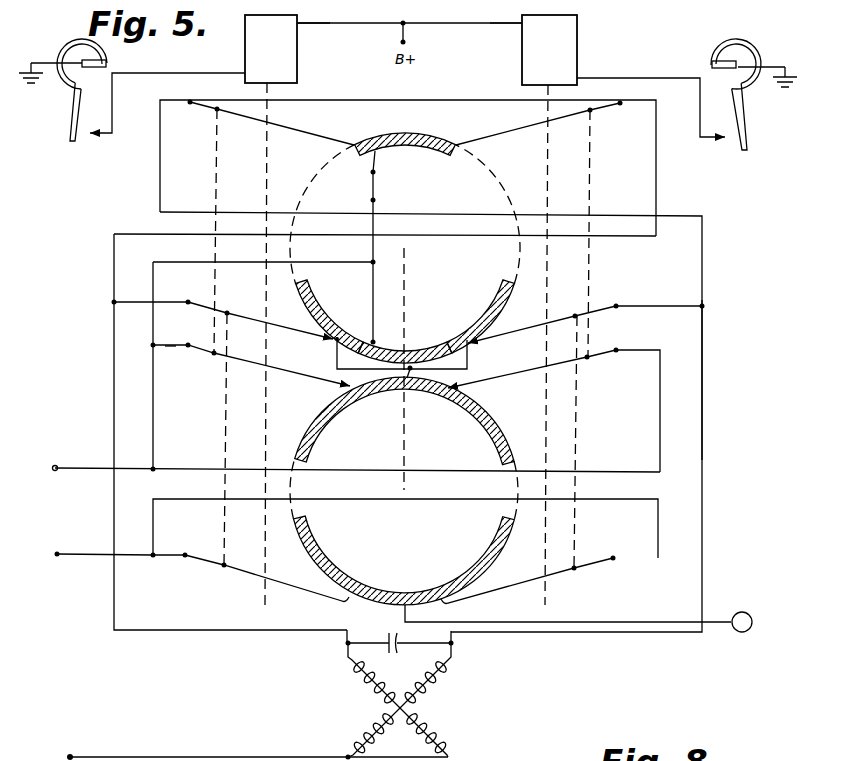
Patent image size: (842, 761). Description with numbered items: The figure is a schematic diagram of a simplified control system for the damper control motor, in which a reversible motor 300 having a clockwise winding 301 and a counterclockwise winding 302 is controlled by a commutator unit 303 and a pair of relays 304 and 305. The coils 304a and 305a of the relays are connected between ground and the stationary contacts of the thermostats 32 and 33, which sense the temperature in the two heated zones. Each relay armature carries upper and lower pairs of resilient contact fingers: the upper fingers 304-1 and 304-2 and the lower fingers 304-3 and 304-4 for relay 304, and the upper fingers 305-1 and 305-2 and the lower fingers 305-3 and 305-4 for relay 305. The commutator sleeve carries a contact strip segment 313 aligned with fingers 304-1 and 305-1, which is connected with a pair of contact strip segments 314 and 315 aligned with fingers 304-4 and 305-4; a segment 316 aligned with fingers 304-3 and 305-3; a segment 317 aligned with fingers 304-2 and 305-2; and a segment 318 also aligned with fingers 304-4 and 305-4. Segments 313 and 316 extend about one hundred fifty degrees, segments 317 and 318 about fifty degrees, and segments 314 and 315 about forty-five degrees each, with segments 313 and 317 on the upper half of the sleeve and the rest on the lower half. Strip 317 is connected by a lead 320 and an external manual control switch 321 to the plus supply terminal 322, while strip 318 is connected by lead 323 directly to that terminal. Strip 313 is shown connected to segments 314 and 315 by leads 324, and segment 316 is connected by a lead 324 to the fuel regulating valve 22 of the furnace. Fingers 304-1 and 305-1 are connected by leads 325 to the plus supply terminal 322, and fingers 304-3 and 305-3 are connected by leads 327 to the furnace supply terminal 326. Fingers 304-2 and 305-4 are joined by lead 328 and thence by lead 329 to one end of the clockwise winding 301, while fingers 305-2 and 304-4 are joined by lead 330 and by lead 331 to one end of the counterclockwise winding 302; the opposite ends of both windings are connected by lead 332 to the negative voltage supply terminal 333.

The fuel regulating valve 22 is at (750, 614).
The thermostat 32 is at (67, 114).
The thermostat 33 is at (757, 95).
The reversible motor 300 is at (428, 695).
The clockwise winding 301 is at (442, 687).
The counterclockwise winding 302 is at (370, 687).
The commutator unit 303 is at (336, 342).
The relay 304 is at (243, 57).
The relay coil 304a is at (298, 58).
The upper contact finger 304-1 is at (315, 405).
The upper contact finger 304-2 is at (283, 123).
The lower contact finger 304-3 is at (297, 590).
The lower contact finger 304-4 is at (298, 333).
The relay 305 is at (581, 53).
The relay coil 305a is at (521, 60).
The upper contact finger 305-1 is at (508, 378).
The upper contact finger 305-2 is at (505, 123).
The lower contact finger 305-3 is at (511, 585).
The lower contact finger 305-4 is at (575, 306).
The contact strip segment 313 is at (377, 400).
The contact strip segment 314 is at (321, 305).
The contact strip segment 315 is at (505, 296).
The contact strip segment 316 is at (357, 591).
The contact strip segment 317 is at (411, 137).
The contact strip segment 318 is at (418, 345).
The lead 320 is at (378, 159).
The external manual control switch 321 is at (376, 186).
The plus supply terminal 322 is at (58, 465).
The lead 323 is at (374, 312).
The lead 324 is at (609, 622).
The lead 325 is at (610, 471).
The furnace supply terminal 326 is at (58, 557).
The lead 327 is at (657, 527).
The lead 328 is at (676, 216).
The lead 329 is at (704, 458).
The lead 330 is at (657, 156).
The lead 331 is at (115, 388).
The lead 332 is at (160, 756).
The negative voltage supply terminal 333 is at (72, 755).